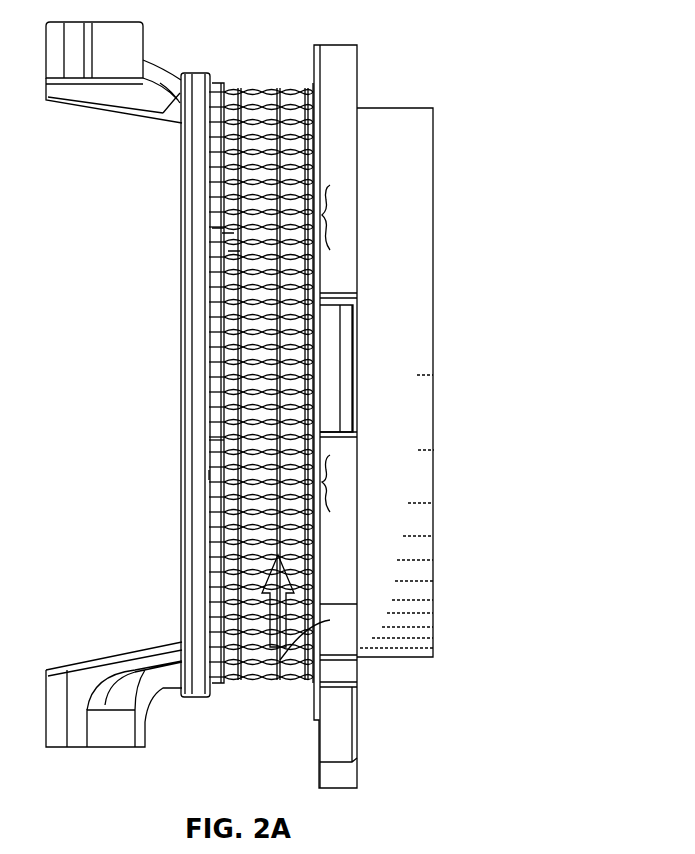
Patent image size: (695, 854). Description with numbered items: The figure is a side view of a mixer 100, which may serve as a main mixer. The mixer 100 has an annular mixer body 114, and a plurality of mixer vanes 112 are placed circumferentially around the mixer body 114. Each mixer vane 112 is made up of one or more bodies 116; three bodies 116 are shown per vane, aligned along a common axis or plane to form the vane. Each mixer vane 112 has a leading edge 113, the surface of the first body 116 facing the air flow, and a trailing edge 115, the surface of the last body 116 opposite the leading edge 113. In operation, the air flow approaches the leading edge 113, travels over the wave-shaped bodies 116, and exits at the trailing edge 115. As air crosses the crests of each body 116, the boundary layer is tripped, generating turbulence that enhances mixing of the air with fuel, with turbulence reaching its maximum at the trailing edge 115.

The mixer 100 is at (523, 45).
The mixer vane 112 is at (330, 195).
The leading edge 113 is at (215, 475).
The mixer body 114 is at (201, 80).
The trailing edge 115 is at (225, 440).
The body 116 is at (212, 230).